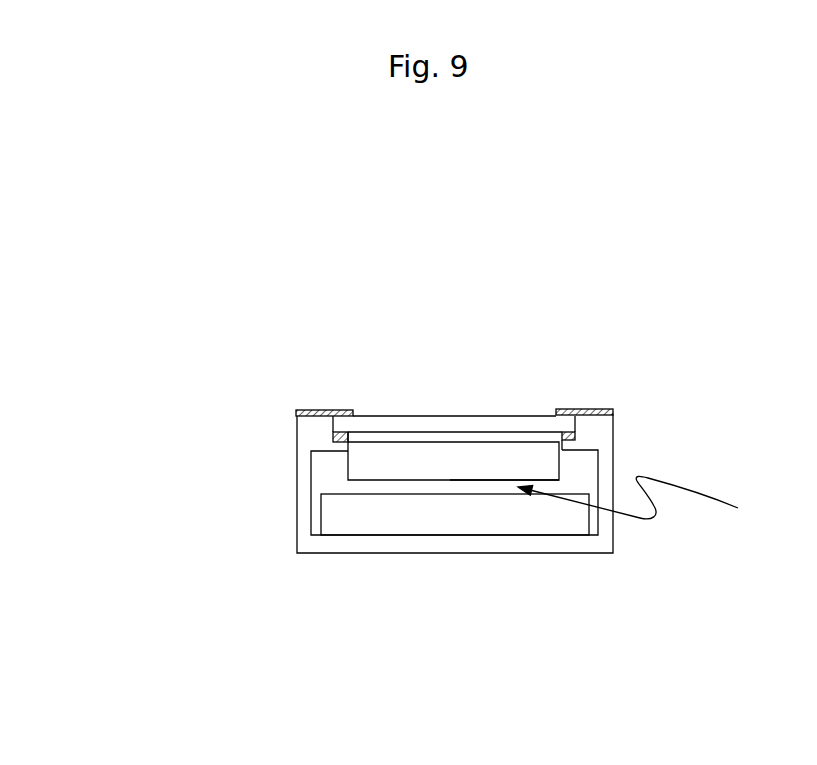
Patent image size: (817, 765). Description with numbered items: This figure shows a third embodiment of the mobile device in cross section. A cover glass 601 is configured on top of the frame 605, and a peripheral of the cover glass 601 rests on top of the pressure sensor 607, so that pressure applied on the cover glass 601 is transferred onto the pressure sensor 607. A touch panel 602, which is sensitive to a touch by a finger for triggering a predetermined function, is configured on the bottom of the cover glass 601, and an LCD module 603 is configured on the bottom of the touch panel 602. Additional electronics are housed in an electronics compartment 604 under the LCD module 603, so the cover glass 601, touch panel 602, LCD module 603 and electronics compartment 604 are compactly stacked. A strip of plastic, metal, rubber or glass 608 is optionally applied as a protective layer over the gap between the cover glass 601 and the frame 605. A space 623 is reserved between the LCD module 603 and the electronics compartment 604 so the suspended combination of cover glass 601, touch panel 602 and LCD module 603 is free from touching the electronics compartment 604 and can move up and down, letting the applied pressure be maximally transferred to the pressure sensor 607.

The cover glass 601 is at (397, 420).
The touch panel 602 is at (464, 438).
The LCD module 603 is at (525, 462).
The electronics compartment 604 is at (437, 508).
The frame 605 is at (300, 507).
The pressure sensor 607 is at (333, 440).
The strip of plastic, metal, rubber or glass 608 is at (322, 410).
The space 623 is at (658, 517).